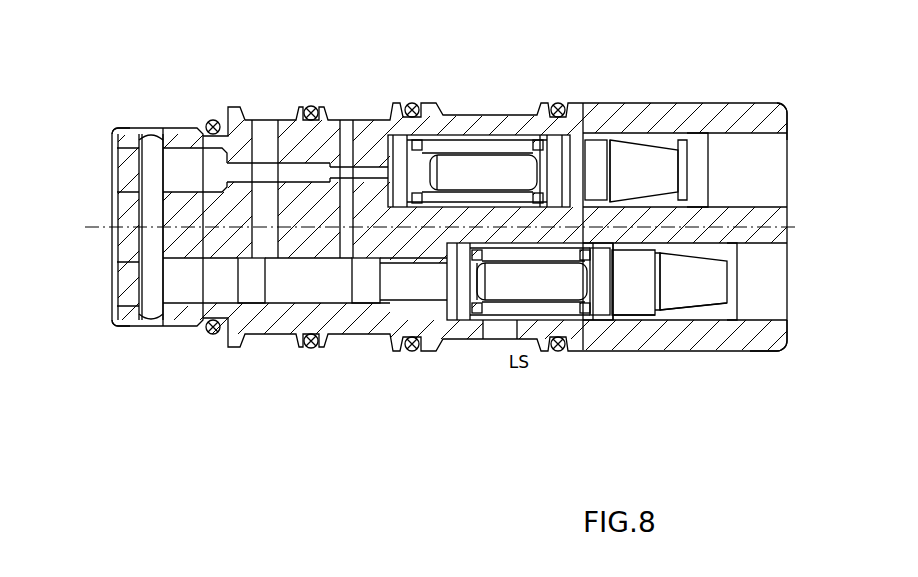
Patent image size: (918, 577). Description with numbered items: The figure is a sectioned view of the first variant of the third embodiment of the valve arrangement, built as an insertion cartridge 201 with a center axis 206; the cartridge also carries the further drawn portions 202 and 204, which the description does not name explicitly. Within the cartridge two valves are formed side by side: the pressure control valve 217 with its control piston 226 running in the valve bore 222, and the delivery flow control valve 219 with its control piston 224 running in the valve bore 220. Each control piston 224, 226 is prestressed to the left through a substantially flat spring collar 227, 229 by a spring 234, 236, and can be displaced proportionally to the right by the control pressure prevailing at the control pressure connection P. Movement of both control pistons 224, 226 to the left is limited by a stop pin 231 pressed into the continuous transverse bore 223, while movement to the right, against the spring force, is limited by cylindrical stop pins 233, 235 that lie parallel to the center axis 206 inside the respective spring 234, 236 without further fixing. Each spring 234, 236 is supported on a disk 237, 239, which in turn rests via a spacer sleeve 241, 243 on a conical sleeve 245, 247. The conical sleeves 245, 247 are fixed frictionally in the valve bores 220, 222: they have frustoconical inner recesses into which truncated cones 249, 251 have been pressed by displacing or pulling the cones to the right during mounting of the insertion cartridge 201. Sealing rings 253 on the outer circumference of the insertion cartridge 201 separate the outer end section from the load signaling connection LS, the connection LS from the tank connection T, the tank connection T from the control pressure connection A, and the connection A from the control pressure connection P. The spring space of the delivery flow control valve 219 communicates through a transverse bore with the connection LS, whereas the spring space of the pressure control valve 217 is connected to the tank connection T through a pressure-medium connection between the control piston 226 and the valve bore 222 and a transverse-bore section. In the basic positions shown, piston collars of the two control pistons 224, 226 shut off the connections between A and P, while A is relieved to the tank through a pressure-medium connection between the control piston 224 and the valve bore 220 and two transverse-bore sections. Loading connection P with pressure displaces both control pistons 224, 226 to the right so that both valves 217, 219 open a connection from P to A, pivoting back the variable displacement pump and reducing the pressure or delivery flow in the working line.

The insertion cartridge 201 is at (167, 97).
The second end portion 202 is at (778, 310).
The first end portion 204 is at (752, 135).
The center axis 206 is at (93, 227).
The pressure control valve 217 is at (117, 113).
The delivery flow control valve 219 is at (104, 343).
The valve bore 220 is at (338, 305).
The valve bore 222 is at (362, 150).
The continuous transverse bore 223 is at (153, 247).
The control piston 224 is at (252, 285).
The control piston 226 is at (263, 172).
The spring collar 227 is at (460, 205).
The spring collar 229 is at (400, 315).
The stop pin 231 is at (148, 300).
The cylindrical stop pin 233 is at (588, 300).
The spring 234 is at (472, 305).
The cylindrical stop pin 235 is at (540, 282).
The spring 236 is at (465, 285).
The disk 237 is at (585, 150).
The disk 239 is at (592, 157).
The spacer sleeve 241 is at (640, 255).
The spacer sleeve 243 is at (600, 150).
The conical sleeve 245 is at (713, 312).
The conical sleeve 247 is at (635, 300).
The truncated cone 249 is at (705, 270).
The truncated cone 251 is at (658, 162).
The sealing ring 253 is at (555, 105).